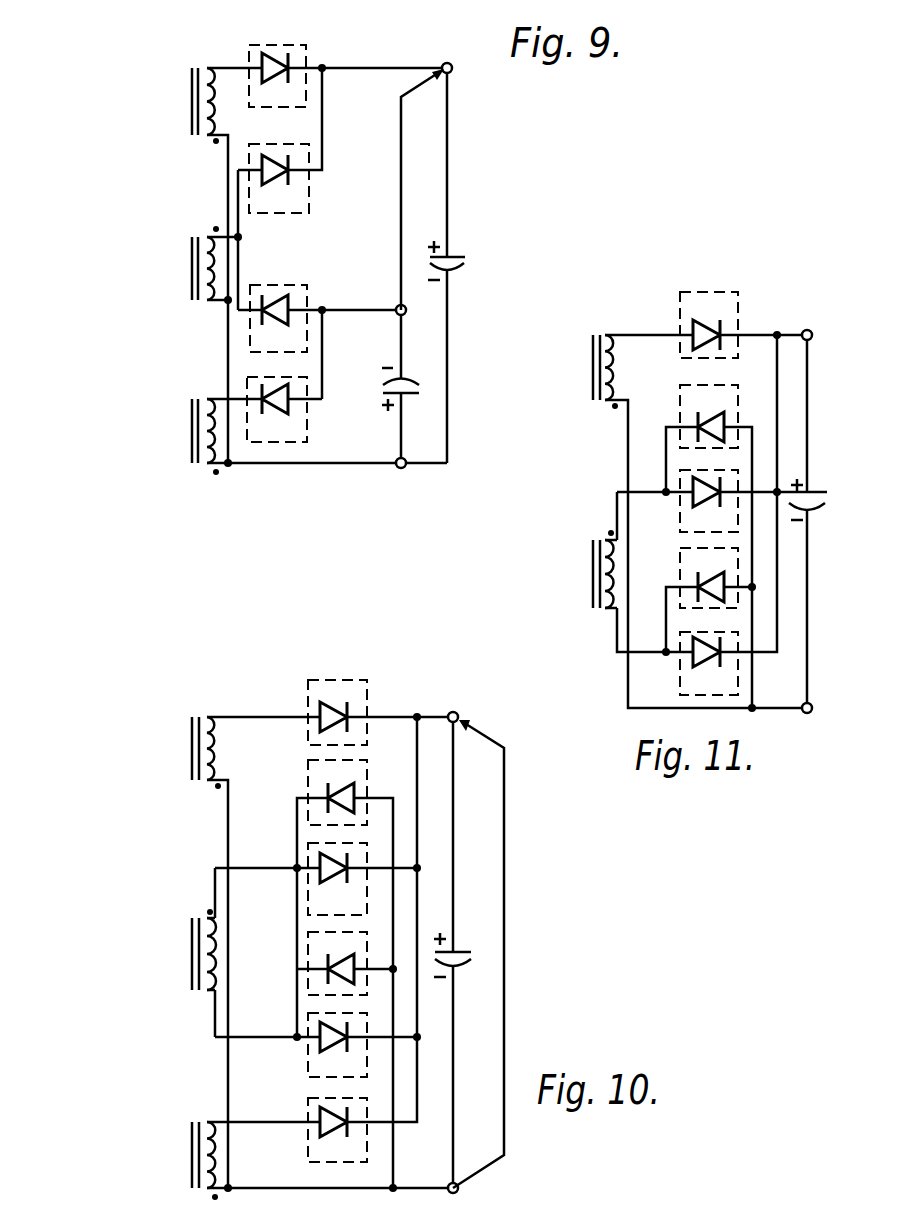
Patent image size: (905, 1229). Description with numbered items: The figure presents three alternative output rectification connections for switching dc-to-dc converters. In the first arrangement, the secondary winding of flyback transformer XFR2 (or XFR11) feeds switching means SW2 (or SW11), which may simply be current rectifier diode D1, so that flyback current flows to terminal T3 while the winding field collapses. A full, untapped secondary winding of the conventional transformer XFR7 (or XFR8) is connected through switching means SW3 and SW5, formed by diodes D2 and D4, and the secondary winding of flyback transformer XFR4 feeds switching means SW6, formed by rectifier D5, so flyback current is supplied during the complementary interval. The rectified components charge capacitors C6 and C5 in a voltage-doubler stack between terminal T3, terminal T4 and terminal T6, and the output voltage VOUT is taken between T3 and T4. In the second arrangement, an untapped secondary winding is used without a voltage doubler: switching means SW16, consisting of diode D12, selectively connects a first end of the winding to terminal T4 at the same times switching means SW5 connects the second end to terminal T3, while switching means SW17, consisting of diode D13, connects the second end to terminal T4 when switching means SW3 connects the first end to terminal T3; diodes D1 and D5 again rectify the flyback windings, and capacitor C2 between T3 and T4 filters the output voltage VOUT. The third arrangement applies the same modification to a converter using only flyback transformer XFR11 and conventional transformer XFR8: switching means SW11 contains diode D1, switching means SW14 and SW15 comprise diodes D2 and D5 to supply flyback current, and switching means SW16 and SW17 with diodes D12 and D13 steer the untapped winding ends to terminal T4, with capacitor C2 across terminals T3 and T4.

In FIG. 9, the current rectifier diode D1 is at (276, 88).
In FIG. 10, the current rectifier diode D1 is at (336, 711).
In FIG. 11, the current rectifier diode D1 is at (707, 314).
In FIG. 9, the current rectifier diode D2 is at (281, 182).
In FIG. 10, the current rectifier diode D2 is at (336, 880).
In FIG. 11, the current rectifier diode D2 is at (710, 505).
In FIG. 9, the current rectifier diode D4 is at (284, 327).
In FIG. 10, the current rectifier diode D4 is at (302, 1082).
In FIG. 9, the current rectifier D5 is at (288, 417).
In FIG. 10, the current rectifier D5 is at (302, 1172).
In FIG. 11, the current rectifier D5 is at (710, 665).
In FIG. 10, the current rectifier diode D12 is at (350, 788).
In FIG. 11, the current rectifier diode D12 is at (724, 415).
In FIG. 10, the current rectifier diode D13 is at (350, 960).
In FIG. 11, the current rectifier diode D13 is at (724, 576).
In FIG. 9, the switching means SW2 is at (321, 60).
In FIG. 10, the switching means SW2 is at (370, 703).
In FIG. 9, the switching means SW3 is at (303, 195).
In FIG. 10, the switching means SW3 is at (299, 884).
In FIG. 9, the switching means SW5 is at (303, 299).
In FIG. 10, the switching means SW5 is at (299, 1053).
In FIG. 9, the switching means SW6 is at (309, 415).
In FIG. 10, the switching means SW6 is at (299, 1140).
In FIG. 11, the switching means SW11 is at (734, 323).
In FIG. 11, the switching means SW14 is at (687, 502).
In FIG. 11, the switching means SW15 is at (685, 663).
In FIG. 10, the switching means SW16 is at (312, 789).
In FIG. 11, the switching means SW16 is at (685, 409).
In FIG. 10, the switching means SW17 is at (312, 962).
In FIG. 11, the switching means SW17 is at (685, 578).
In FIG. 10, the capacitor C2 is at (480, 936).
In FIG. 11, the capacitor C2 is at (808, 540).
In FIG. 9, the capacitor C5 is at (417, 382).
In FIG. 9, the capacitor C6 is at (448, 261).
In FIG. 9, the terminal T3 is at (447, 63).
In FIG. 10, the terminal T3 is at (456, 695).
In FIG. 11, the terminal T3 is at (810, 313).
In FIG. 9, the terminal T4 is at (401, 316).
In FIG. 10, the terminal T4 is at (451, 1183).
In FIG. 11, the terminal T4 is at (807, 713).
In FIG. 9, the terminal T6 is at (403, 458).
In FIG. 9, the flyback transformer XFR2 is at (133, 102).
In FIG. 10, the flyback transformer XFR2 is at (134, 750).
In FIG. 9, the transformer XFR7 is at (133, 257).
In FIG. 10, the transformer XFR7 is at (132, 951).
In FIG. 9, the flyback transformer XFR4 is at (133, 431).
In FIG. 10, the flyback transformer XFR4 is at (133, 1157).
In FIG. 11, the flyback transformer XFR11 is at (556, 375).
In FIG. 11, the transformer XFR8 is at (554, 561).
In FIG. 9, the output voltage VOUT is at (415, 189).
In FIG. 10, the output voltage VOUT is at (490, 954).